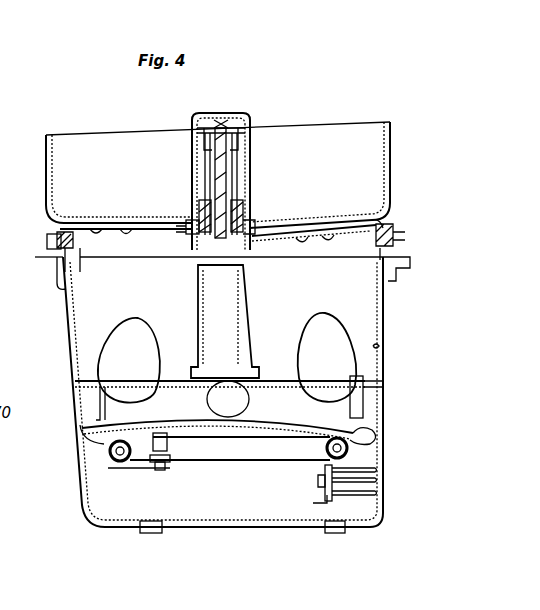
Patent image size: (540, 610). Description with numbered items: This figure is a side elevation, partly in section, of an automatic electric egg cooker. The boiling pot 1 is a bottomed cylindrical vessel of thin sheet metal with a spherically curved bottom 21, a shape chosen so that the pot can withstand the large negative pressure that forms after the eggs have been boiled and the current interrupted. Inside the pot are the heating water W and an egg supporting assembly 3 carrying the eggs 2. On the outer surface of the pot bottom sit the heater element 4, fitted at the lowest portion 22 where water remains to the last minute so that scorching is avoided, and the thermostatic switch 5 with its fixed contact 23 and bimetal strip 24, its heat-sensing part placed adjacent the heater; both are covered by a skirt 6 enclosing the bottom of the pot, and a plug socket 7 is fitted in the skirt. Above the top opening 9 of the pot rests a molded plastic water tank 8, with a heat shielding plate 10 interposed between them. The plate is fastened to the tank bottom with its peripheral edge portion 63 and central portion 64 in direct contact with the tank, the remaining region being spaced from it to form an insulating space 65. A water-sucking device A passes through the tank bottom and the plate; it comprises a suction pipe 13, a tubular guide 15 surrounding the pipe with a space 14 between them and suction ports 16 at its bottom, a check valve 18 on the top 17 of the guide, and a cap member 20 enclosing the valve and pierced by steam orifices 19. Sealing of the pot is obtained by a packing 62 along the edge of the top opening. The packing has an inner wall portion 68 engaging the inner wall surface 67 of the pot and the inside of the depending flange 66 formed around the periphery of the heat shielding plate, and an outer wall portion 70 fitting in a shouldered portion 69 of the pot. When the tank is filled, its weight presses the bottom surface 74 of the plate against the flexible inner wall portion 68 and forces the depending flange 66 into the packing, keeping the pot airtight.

The boiling pot 1 is at (66, 316).
The eggs 2 is at (137, 325).
The egg supporting assembly 3 is at (173, 376).
The heater element 4 is at (112, 458).
The thermostatic switch 5 is at (160, 470).
The skirt 6 is at (86, 513).
The plug socket 7 is at (378, 494).
The water tank 8 is at (46, 157).
The top opening 9 is at (312, 247).
The heat shielding plate 10 is at (127, 240).
The suction pipe 13 is at (215, 182).
The space 14 is at (240, 166).
The tubular guide 15 is at (250, 144).
The suction ports 16 is at (196, 225).
The top of the tubular guide 17 is at (192, 117).
The check valve 18 is at (205, 114).
The steam orifices 19 is at (238, 114).
The cap member 20 is at (221, 114).
The spherically curved bottom 21 is at (222, 440).
The lowest portion 22 is at (105, 452).
The fixed contact 23 is at (126, 470).
The bimetal strip 24 is at (142, 470).
The packing 62 is at (47, 240).
The peripheral edge portion 63 is at (80, 248).
The central portion 64 is at (195, 238).
The space 65 is at (168, 238).
The depending flange 66 is at (390, 220).
The inner wall surface 67 is at (383, 349).
The inner wall portion 68 is at (352, 248).
The shouldered portion 69 is at (410, 258).
The outer wall portion 70 is at (396, 226).
The bottom surface 74 is at (316, 238).
The water-sucking device A is at (185, 167).
The heating water W is at (383, 430).